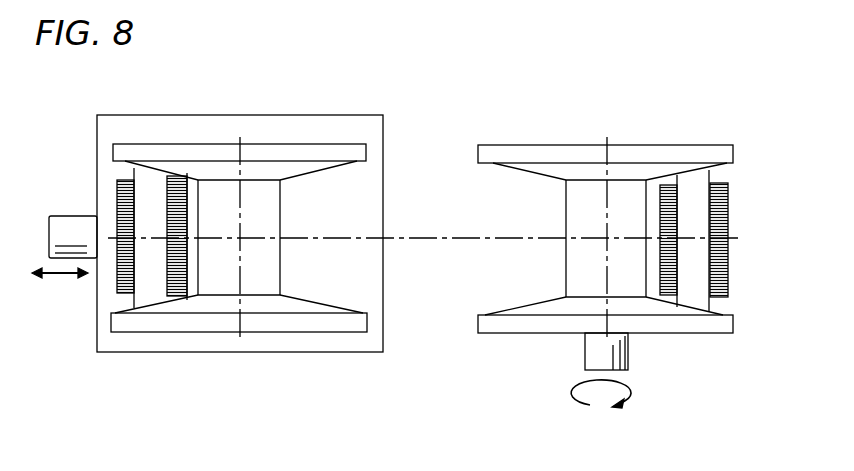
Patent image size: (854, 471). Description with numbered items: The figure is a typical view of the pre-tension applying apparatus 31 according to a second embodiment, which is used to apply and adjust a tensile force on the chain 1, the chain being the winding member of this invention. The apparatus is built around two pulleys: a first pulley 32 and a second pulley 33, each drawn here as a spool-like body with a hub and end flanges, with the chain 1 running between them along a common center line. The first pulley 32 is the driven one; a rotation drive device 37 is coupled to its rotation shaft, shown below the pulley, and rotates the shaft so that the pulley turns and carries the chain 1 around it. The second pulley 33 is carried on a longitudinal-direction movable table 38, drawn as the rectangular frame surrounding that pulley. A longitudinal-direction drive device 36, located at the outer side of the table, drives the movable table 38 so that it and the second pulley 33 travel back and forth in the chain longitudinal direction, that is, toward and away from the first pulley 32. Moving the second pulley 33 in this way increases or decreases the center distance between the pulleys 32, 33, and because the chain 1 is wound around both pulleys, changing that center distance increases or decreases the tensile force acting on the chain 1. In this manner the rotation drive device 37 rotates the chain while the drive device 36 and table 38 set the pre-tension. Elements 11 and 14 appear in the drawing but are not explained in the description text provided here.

The chain 1 is at (728, 210).
The magnet 11 is at (728, 265).
The magnet holder 14 is at (707, 179).
The pre-tension applying apparatus 31 is at (440, 130).
The first pulley 32 is at (688, 322).
The second pulley 33 is at (330, 322).
The longitudinal-direction drive device 36 is at (68, 228).
The rotation drive device 37 is at (590, 353).
The longitudinal-direction movable table 38 is at (147, 343).